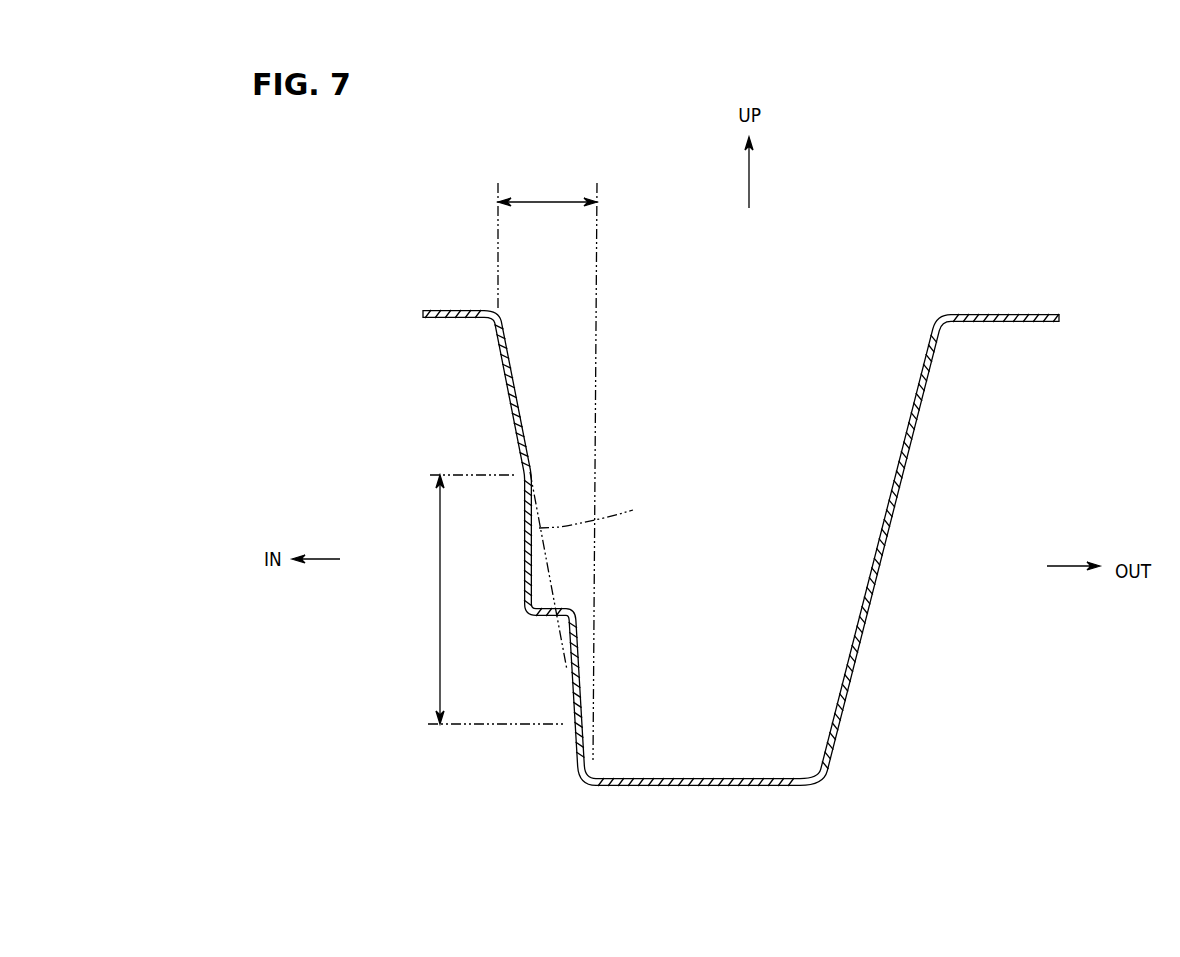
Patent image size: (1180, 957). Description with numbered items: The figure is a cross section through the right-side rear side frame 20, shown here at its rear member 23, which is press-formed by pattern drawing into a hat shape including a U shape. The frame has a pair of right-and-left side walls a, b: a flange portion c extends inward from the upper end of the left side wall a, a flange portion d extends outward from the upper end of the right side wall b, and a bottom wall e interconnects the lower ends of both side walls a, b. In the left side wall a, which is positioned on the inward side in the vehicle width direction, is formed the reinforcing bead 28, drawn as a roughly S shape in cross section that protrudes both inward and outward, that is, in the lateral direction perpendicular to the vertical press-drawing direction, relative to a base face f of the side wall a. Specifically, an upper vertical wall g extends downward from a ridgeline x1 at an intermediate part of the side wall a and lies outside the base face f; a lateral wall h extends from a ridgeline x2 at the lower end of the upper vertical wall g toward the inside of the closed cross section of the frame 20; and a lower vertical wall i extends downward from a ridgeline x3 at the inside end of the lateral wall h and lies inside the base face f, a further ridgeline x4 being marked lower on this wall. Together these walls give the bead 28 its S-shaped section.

The rear side frame 20 is at (943, 433).
The rear member 23 is at (893, 522).
The reinforcing bead 28 is at (440, 590).
The left side wall a is at (505, 390).
The right side wall b is at (876, 591).
The flange portion c is at (441, 310).
The flange portion d is at (1009, 314).
The bottom wall e is at (705, 790).
The base face f is at (592, 514).
The upper vertical wall g is at (523, 556).
The lateral wall h is at (545, 618).
The lower vertical wall i is at (578, 653).
The ridgeline x1 is at (530, 466).
The ridgeline x2 is at (526, 613).
The ridgeline x3 is at (576, 613).
The bend point x4 is at (586, 724).